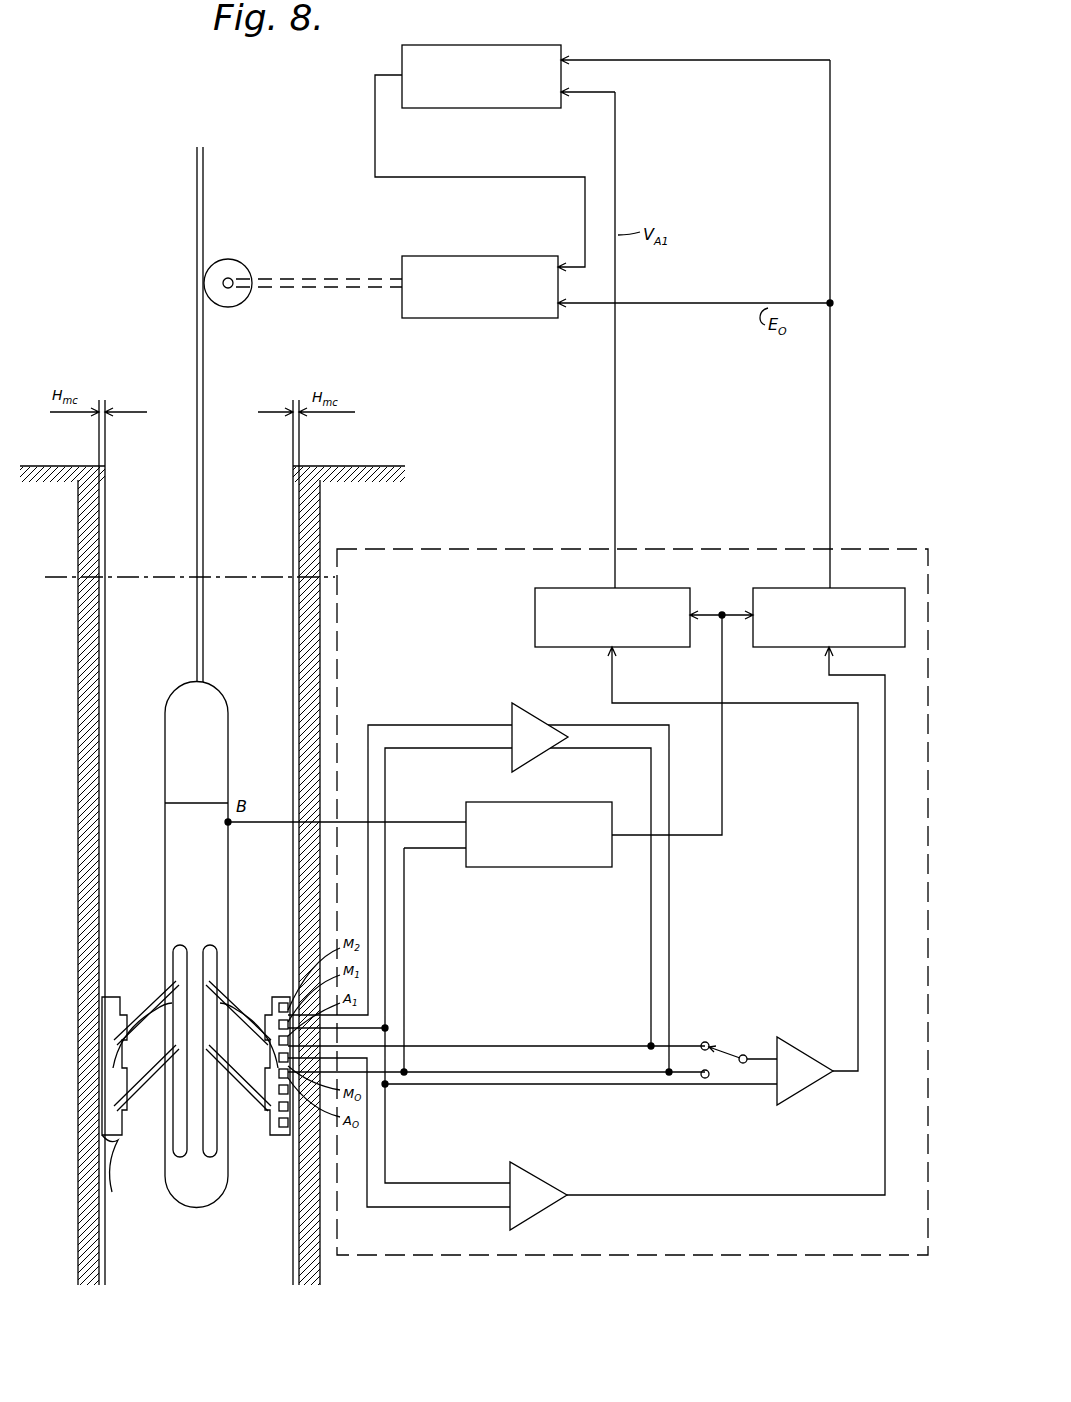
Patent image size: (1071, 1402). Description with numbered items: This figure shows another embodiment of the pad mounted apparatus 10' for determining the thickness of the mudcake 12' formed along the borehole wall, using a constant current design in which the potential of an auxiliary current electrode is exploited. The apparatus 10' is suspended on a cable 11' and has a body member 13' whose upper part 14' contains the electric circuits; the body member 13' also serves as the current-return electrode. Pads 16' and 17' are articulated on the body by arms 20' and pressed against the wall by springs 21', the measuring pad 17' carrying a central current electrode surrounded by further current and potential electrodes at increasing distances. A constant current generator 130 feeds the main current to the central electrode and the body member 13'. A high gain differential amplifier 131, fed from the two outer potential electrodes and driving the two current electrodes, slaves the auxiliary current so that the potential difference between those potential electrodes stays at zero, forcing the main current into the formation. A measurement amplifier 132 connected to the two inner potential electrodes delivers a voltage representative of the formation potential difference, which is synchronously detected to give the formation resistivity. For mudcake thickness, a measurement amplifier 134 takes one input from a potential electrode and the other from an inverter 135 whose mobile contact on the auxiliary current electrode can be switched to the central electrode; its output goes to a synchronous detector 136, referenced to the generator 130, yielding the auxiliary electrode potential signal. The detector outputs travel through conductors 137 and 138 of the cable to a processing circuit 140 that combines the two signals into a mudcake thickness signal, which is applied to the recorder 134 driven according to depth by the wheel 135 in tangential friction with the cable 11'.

The apparatus 10' is at (173, 945).
The cable 11' is at (230, 414).
The mudcake 12' is at (199, 842).
The body member 13' is at (173, 989).
The upper part 14' is at (175, 742).
The pad 16' is at (124, 1169).
The measuring pad 17' is at (248, 1090).
The arms 20' is at (137, 1036).
The springs 21' is at (146, 1064).
The constant current generator 130 is at (563, 868).
The high gain differential amplifier 131 is at (528, 715).
The measurement amplifier 132 is at (530, 1172).
The measurement amplifier 134 is at (488, 256).
The inverter 135 is at (240, 265).
The synchronous detector 136 is at (535, 612).
The conductor 137 is at (832, 240).
The conductor 138 is at (617, 390).
The processing circuit 140 is at (540, 45).